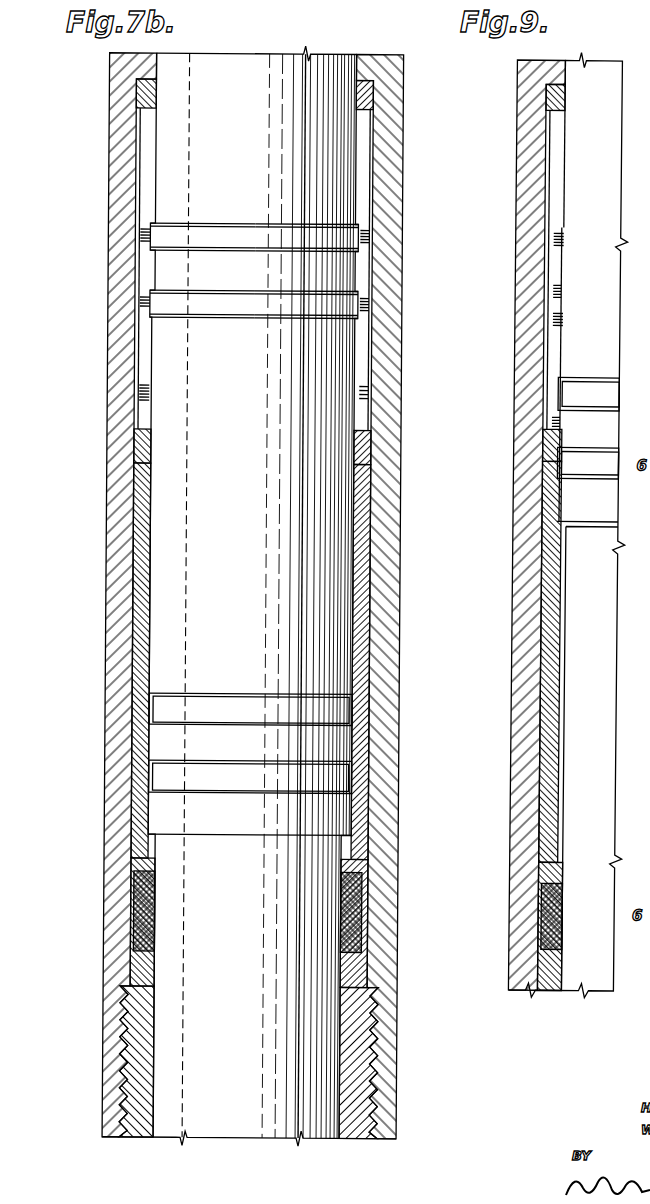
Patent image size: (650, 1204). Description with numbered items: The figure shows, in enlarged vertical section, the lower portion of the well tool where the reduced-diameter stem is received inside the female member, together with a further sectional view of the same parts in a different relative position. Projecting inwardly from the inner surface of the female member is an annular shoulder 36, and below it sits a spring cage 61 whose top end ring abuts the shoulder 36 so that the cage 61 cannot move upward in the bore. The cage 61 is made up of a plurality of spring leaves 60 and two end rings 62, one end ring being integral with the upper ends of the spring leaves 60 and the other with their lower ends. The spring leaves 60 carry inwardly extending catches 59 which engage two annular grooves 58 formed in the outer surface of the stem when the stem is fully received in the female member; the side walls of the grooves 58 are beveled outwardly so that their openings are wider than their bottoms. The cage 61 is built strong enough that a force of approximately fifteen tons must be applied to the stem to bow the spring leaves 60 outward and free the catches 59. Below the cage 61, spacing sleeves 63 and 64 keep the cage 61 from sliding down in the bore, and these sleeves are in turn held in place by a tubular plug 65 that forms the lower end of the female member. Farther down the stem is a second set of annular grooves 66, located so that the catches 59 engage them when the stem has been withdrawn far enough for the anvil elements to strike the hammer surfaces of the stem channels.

In FIG. 7B, the annular shoulder 36 is at (364, 66).
In FIG. 7B, the annular grooves 58 is at (160, 236).
In FIG. 7B, the catches 59 is at (359, 241).
In FIG. 9, the catches 59 is at (566, 238).
In FIG. 7B, the spring leaves 60 is at (152, 354).
In FIG. 9, the spring leaves 60 is at (553, 285).
In FIG. 7B, the cage 61 is at (146, 440).
In FIG. 9, the cage 61 is at (554, 132).
In FIG. 7B, the end rings 62 is at (374, 97).
In FIG. 9, the end rings 62 is at (548, 86).
In FIG. 7B, the spacing sleeve 63 is at (369, 623).
In FIG. 9, the spacing sleeve 63 is at (556, 606).
In FIG. 7B, the spacing sleeve 64 is at (371, 874).
In FIG. 9, the spacing sleeve 64 is at (553, 894).
In FIG. 7B, the tubular plug 65 is at (375, 1062).
In FIG. 7B, the annular grooves 66 is at (355, 709).
In FIG. 9, the annular grooves 66 is at (570, 381).